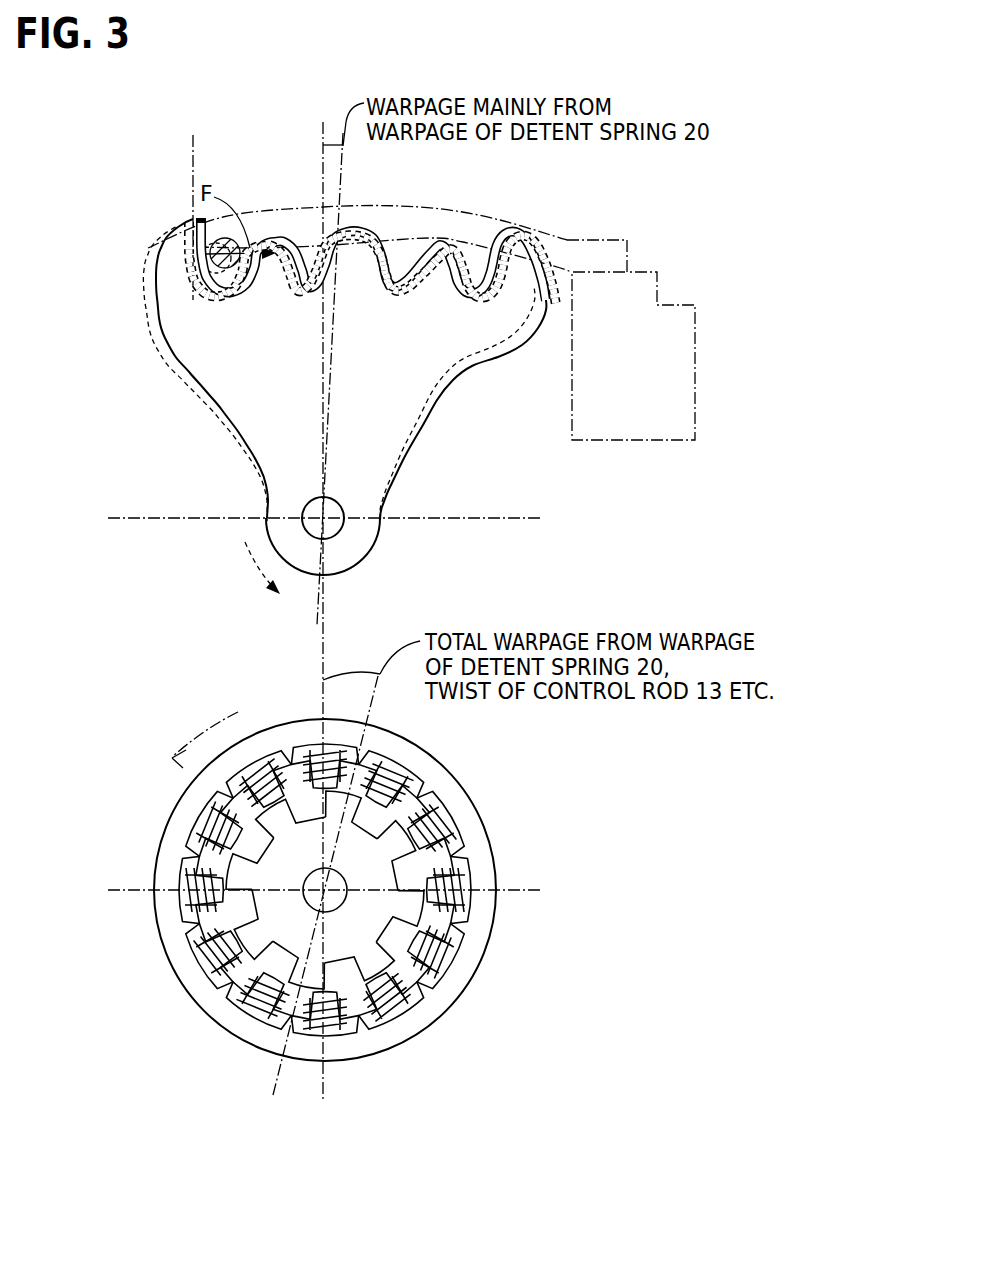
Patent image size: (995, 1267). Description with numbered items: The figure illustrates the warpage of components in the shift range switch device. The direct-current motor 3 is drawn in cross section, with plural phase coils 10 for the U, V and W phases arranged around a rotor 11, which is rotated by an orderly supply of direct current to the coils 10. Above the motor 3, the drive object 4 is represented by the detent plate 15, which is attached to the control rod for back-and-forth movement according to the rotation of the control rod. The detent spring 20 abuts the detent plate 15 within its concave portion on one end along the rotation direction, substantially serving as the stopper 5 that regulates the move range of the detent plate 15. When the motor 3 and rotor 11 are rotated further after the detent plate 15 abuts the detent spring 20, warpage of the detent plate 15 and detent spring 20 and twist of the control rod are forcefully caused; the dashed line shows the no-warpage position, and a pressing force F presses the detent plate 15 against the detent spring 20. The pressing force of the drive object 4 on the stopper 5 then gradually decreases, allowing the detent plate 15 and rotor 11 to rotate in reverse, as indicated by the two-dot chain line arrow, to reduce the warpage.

The direct-current motor 3 is at (199, 1039).
The drive object 4 is at (344, 368).
The stopper 5 is at (421, 299).
The phase coils 10 is at (463, 890).
The rotor 11 is at (403, 858).
The detent plate 15 is at (417, 440).
The detent spring 20 is at (475, 216).